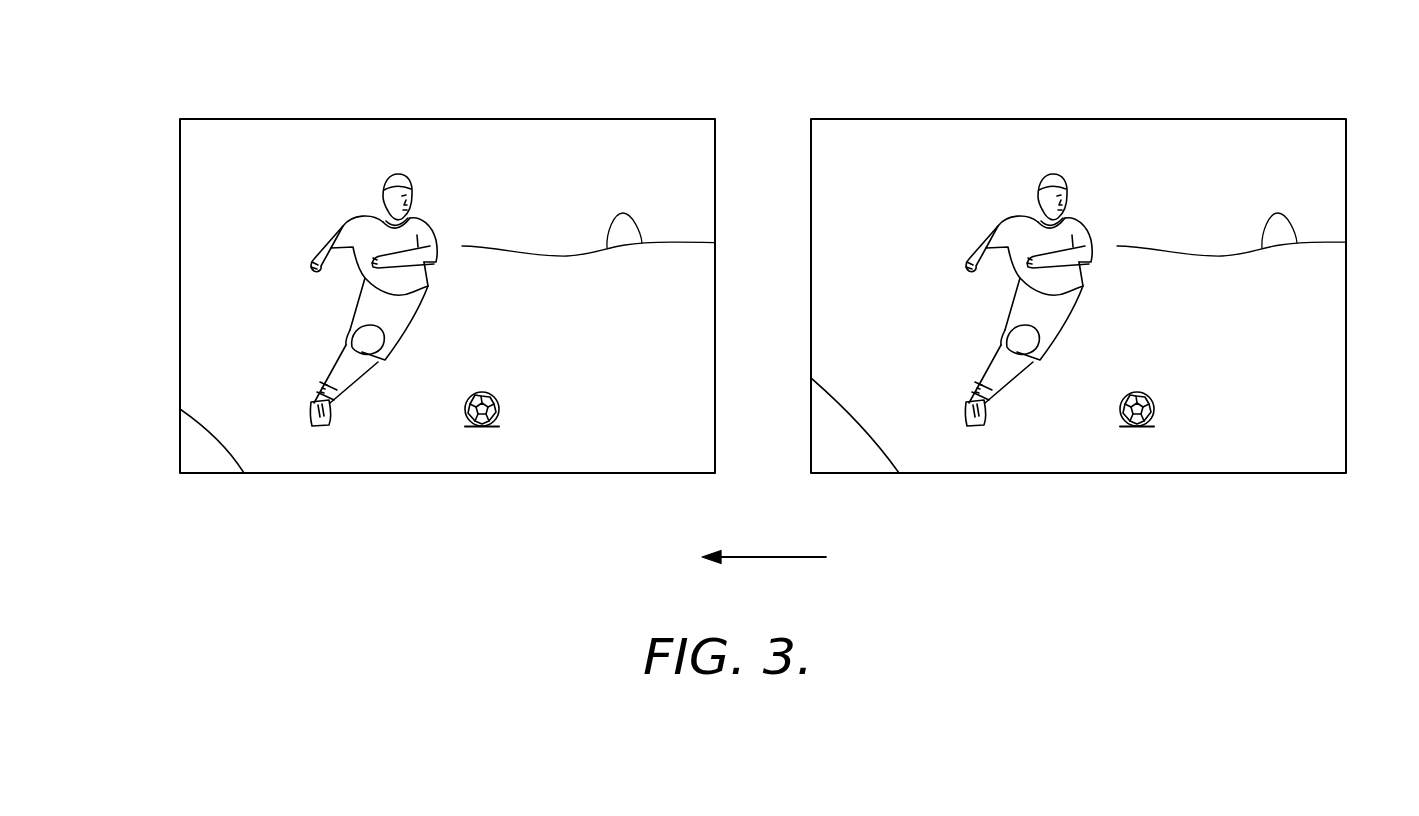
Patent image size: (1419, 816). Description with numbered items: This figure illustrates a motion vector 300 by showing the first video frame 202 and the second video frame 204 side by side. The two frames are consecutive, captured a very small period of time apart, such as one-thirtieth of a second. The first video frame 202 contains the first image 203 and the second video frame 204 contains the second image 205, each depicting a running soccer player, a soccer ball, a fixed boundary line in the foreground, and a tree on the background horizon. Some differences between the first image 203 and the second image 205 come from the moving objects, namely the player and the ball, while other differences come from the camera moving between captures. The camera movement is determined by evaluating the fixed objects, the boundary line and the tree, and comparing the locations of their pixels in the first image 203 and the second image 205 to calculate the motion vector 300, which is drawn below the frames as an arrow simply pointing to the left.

The first video frame 202 is at (715, 473).
The first image 203 is at (232, 140).
The second video frame 204 is at (1346, 473).
The second image 205 is at (865, 141).
The motion vector 300 is at (789, 558).